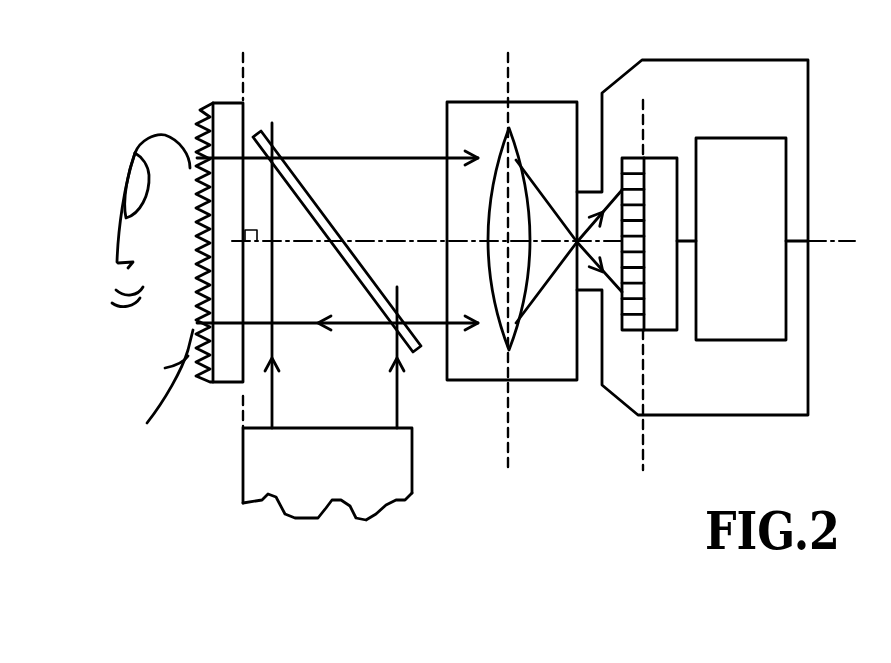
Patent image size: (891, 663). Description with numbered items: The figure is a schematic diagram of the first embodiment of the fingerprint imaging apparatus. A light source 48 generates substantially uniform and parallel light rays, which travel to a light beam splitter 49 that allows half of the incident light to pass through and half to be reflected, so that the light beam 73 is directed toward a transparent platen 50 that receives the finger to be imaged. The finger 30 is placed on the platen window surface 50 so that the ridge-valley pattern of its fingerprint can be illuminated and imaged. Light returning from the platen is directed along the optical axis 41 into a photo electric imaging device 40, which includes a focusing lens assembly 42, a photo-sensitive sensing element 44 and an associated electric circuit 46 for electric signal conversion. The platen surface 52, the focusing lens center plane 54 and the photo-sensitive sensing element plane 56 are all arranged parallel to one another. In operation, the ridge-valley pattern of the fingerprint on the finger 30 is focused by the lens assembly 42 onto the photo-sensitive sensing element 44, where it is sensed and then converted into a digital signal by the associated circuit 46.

The finger 30 is at (155, 357).
The photo electric imaging device 40 is at (808, 210).
The optical axis 41 is at (428, 241).
The focusing lens assembly 42 is at (519, 159).
The photo-sensitive sensing element 44 is at (652, 182).
The associated electric circuit 46 is at (758, 284).
The light source 48 is at (348, 476).
The light beam splitter 49 is at (306, 186).
The transparent platen 50 is at (217, 122).
The platen surface 52 is at (242, 400).
The focusing lens center plane 54 is at (507, 405).
The photo-sensitive sensing element plane 56 is at (640, 428).
The light beam 73 is at (348, 157).